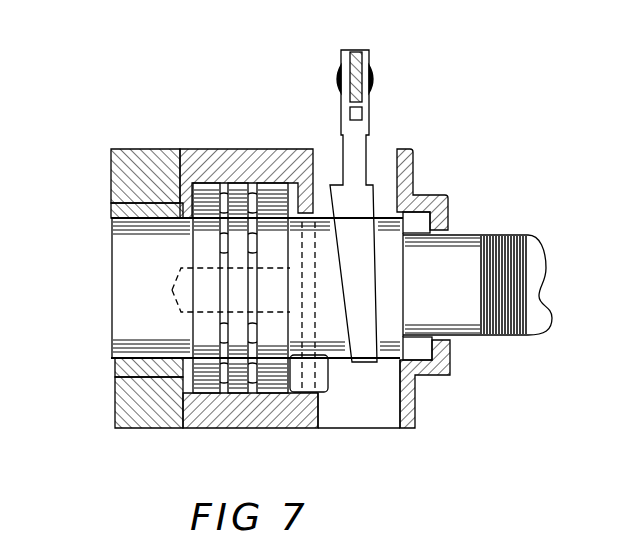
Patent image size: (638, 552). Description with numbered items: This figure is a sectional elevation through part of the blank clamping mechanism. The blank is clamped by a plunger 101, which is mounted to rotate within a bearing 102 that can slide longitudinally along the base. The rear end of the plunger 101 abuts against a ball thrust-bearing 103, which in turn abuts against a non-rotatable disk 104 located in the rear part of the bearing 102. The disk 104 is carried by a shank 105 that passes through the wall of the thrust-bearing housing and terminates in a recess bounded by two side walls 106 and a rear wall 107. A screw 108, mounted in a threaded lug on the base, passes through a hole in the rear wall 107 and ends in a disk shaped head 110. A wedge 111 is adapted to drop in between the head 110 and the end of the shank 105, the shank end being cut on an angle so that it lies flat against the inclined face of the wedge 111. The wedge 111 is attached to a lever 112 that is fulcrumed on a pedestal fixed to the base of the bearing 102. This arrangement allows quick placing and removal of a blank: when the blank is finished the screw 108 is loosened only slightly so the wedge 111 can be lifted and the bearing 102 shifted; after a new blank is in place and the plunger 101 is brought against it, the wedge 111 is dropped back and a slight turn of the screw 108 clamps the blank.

The plunger 101 is at (135, 276).
The bearing 102 is at (143, 163).
The ball thrust-bearing 103 is at (240, 190).
The non-rotatable disk 104 is at (278, 190).
The shank 105 is at (352, 380).
The side walls 106 is at (378, 415).
The rear wall 107 is at (416, 186).
The screw 108 is at (525, 212).
The disk shaped head 110 is at (396, 290).
The wedge 111 is at (390, 186).
The lever 112 is at (358, 48).